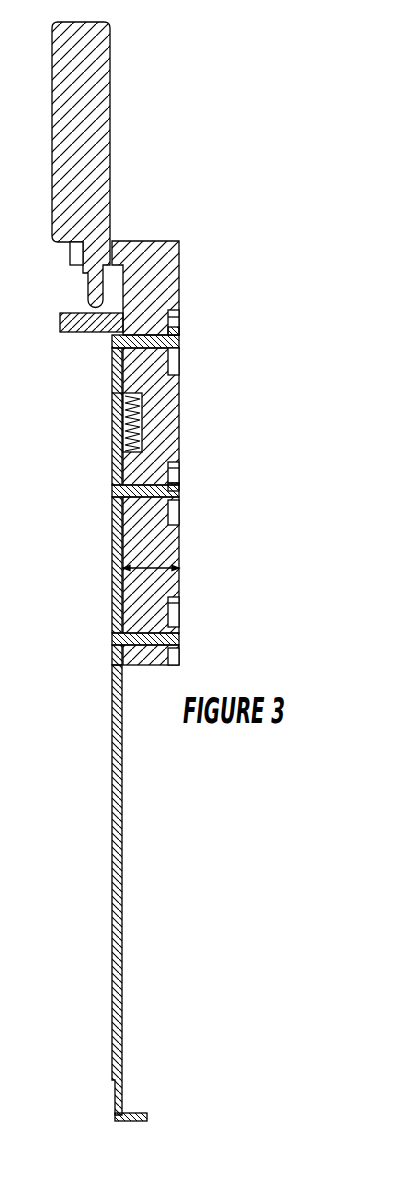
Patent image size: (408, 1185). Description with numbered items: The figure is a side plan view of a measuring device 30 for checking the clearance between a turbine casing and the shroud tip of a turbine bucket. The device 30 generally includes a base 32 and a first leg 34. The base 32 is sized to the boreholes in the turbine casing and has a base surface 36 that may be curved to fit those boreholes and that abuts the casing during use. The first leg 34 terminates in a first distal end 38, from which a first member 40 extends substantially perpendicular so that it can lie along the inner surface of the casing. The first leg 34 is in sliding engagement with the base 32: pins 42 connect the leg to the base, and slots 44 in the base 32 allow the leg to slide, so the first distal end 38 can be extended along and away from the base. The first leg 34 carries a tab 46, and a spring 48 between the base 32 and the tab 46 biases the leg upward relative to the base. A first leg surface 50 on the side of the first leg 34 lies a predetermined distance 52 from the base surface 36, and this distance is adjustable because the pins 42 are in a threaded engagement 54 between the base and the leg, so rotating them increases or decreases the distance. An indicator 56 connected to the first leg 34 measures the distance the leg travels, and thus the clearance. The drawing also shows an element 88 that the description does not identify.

The measuring device 30 is at (252, 172).
The base 32 is at (183, 412).
The first leg 34 is at (110, 587).
The base surface 36 is at (180, 550).
The first distal end 38 is at (120, 1125).
The first member 40 is at (140, 1113).
The pins 42 is at (180, 342).
The slots 44 is at (170, 366).
The tab 46 is at (110, 396).
The spring 48 is at (123, 441).
The first leg surface 50 is at (127, 617).
The predetermined distance 52 is at (180, 593).
The threaded engagement 54 is at (128, 507).
The indicator 56 is at (110, 72).
The plate 88 is at (118, 330).